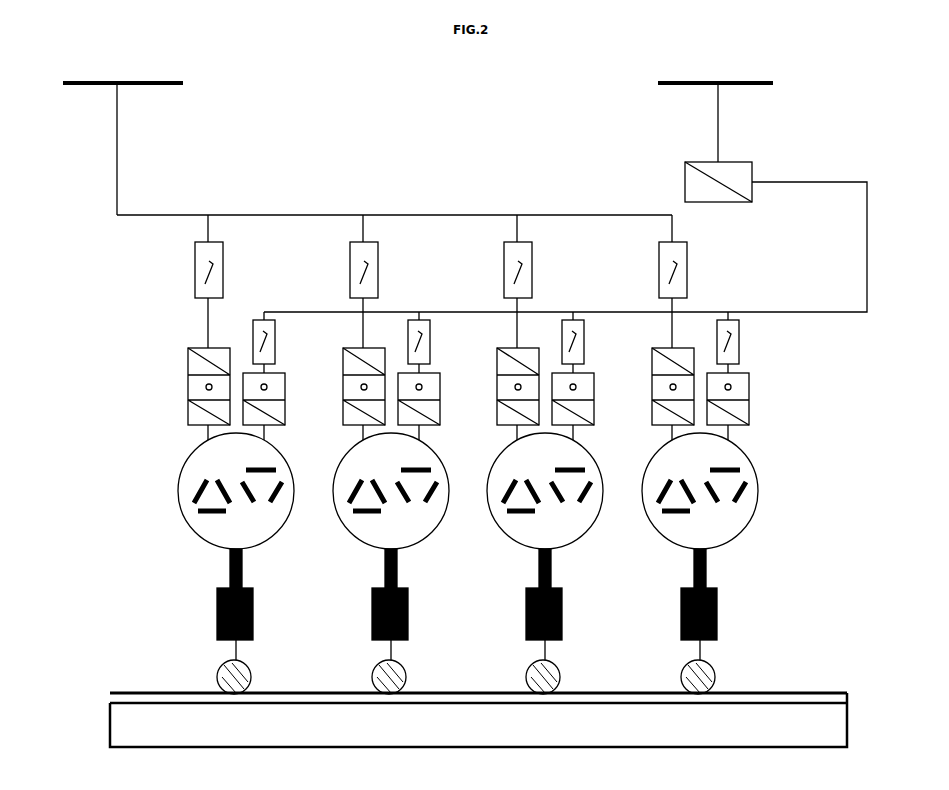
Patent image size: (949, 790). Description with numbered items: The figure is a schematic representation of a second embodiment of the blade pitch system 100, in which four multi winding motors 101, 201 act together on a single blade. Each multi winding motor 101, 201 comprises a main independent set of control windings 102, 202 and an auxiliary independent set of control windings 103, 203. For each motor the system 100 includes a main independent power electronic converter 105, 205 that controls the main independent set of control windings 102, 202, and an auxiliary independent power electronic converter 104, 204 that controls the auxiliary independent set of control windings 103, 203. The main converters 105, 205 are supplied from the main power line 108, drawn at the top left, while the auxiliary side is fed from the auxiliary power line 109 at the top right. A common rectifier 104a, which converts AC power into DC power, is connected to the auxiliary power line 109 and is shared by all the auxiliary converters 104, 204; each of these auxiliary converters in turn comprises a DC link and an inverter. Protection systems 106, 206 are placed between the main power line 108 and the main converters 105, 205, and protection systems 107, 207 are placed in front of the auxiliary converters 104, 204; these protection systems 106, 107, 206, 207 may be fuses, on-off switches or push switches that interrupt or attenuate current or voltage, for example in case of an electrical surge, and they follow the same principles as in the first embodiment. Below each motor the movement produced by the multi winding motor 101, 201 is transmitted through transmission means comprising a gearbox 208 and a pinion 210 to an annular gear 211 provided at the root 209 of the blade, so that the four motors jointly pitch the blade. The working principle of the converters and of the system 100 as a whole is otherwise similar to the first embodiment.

The blade pitch system 100 is at (386, 148).
The multi winding motor 101 is at (186, 528).
The main independent set of control windings 102 is at (206, 529).
The auxiliary independent set of control windings 103 is at (256, 512).
The auxiliary independent power electronic converter 104 is at (287, 425).
The common rectifier 104a is at (756, 200).
The main independent power electronic converter 105 is at (185, 372).
The protection system 106 is at (192, 262).
The protection system 107 is at (277, 345).
The main power line 108 is at (119, 79).
The auxiliary power line 109 is at (720, 79).
The multi winding motor 201 is at (262, 540).
The main independent set of control windings 202 is at (361, 529).
The auxiliary independent set of control windings 203 is at (410, 512).
The auxiliary independent power electronic converter 204 is at (442, 425).
The main independent power electronic converter 205 is at (341, 372).
The protection system 206 is at (347, 262).
The protection system 207 is at (432, 345).
The gearbox 208 is at (215, 612).
The root of the blade 209 is at (851, 722).
The pinion 210 is at (253, 676).
The annular gear 211 is at (851, 694).